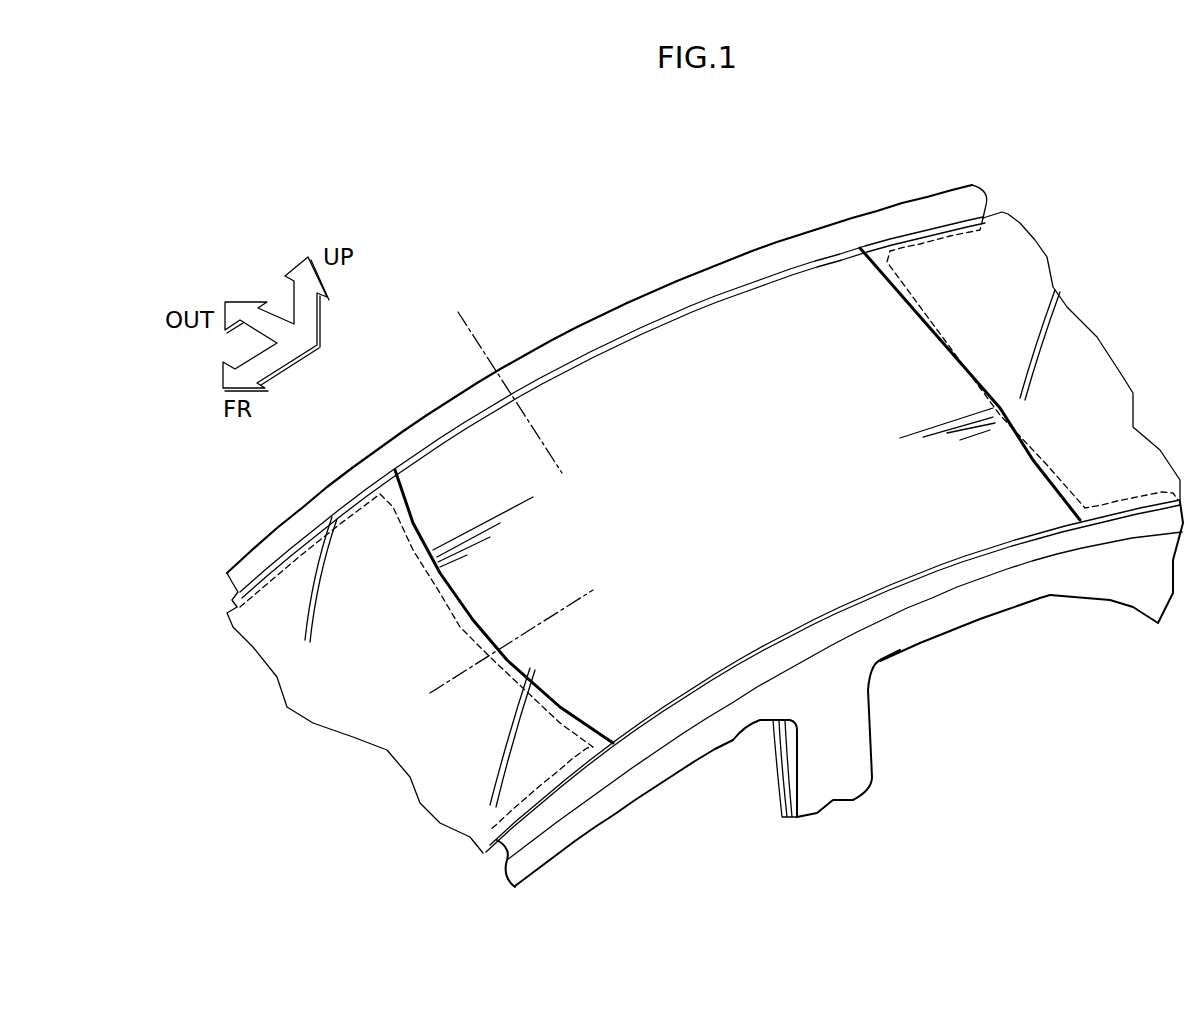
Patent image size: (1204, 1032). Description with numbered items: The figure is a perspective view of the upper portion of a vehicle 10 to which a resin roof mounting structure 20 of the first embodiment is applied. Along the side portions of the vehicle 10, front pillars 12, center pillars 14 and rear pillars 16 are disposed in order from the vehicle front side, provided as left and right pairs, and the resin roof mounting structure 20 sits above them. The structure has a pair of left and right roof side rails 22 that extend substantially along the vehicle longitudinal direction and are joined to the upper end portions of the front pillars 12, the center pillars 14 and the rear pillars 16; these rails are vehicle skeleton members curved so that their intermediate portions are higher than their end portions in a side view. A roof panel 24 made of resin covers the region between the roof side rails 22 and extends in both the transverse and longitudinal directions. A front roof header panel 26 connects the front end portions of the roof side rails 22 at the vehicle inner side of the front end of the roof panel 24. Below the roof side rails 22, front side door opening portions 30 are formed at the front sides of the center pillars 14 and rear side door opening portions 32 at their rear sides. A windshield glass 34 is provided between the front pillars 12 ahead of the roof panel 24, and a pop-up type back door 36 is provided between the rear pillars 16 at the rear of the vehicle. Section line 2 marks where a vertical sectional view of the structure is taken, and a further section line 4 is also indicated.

The vehicle 10 is at (669, 188).
The front pillars 12 is at (543, 848).
The center pillars 14 is at (850, 753).
The rear pillars 16 is at (1138, 602).
The resin roof mounting structure 20 is at (807, 220).
The roof side rails 22 is at (627, 318).
The roof panel 24 is at (747, 320).
The front roof header panel 26 is at (440, 593).
The front side door opening portions 30 is at (712, 750).
The rear side door opening portions 32 is at (1023, 607).
The windshield glass 34 is at (353, 530).
The back door 36 is at (1013, 277).
The line 2- 2 is at (473, 316).
The section line 4 is at (448, 695).